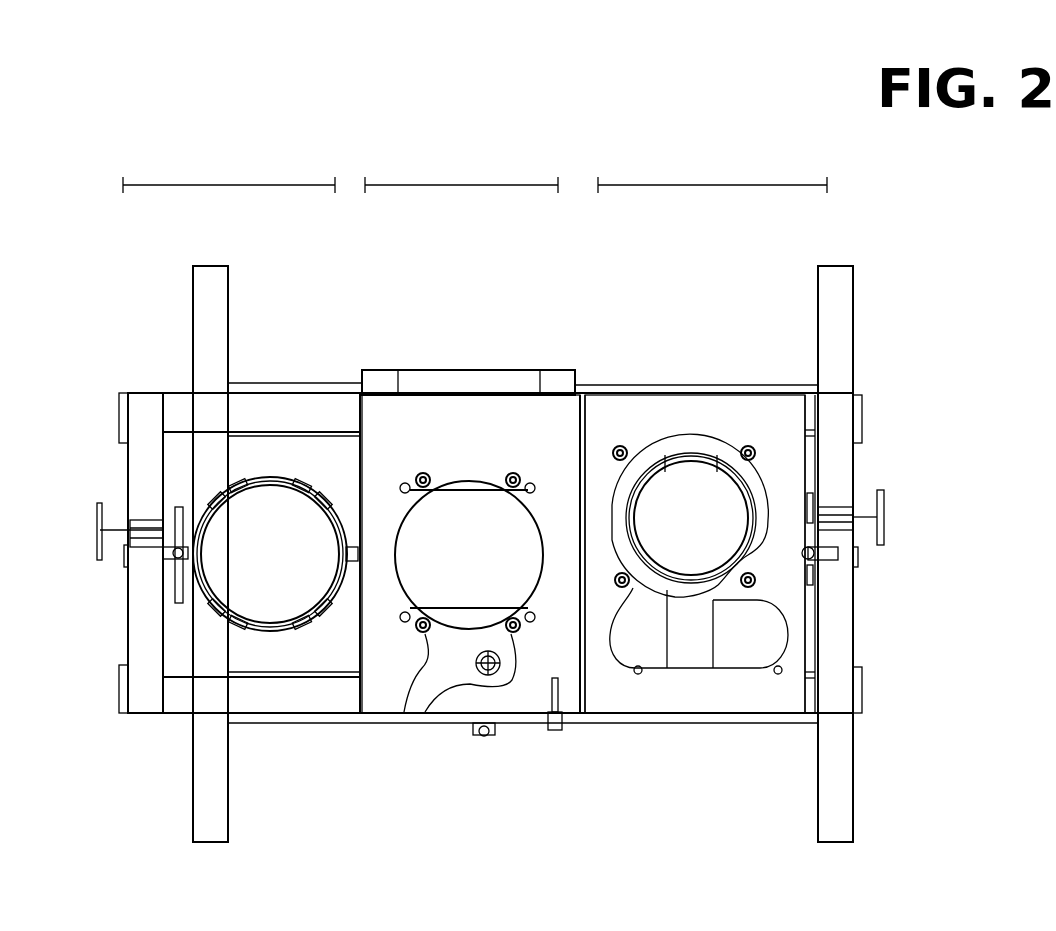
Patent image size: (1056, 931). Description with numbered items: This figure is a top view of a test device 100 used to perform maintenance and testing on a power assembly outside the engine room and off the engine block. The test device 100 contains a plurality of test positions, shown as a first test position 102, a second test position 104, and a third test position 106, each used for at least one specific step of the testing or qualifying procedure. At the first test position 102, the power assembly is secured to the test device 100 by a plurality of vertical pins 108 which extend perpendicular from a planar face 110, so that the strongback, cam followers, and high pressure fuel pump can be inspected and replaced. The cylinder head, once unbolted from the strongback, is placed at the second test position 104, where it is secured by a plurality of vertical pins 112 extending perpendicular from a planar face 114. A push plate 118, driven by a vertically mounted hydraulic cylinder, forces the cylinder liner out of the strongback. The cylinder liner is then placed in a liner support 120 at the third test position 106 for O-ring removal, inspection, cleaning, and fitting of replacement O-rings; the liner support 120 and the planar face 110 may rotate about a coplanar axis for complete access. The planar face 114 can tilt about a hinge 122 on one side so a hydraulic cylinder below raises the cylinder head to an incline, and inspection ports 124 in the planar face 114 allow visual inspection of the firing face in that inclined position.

The test device 100 is at (955, 848).
The first test position 102 is at (703, 185).
The second test position 104 is at (455, 185).
The third test position 106 is at (235, 185).
The vertical pins 108 is at (748, 446).
The planar face 110 is at (780, 414).
The vertical pins 112 is at (510, 473).
The planar face 114 is at (553, 418).
The push plate 118 is at (708, 508).
The liner support 120 is at (266, 478).
The hinge 122 is at (458, 370).
The inspection ports 124 is at (543, 555).